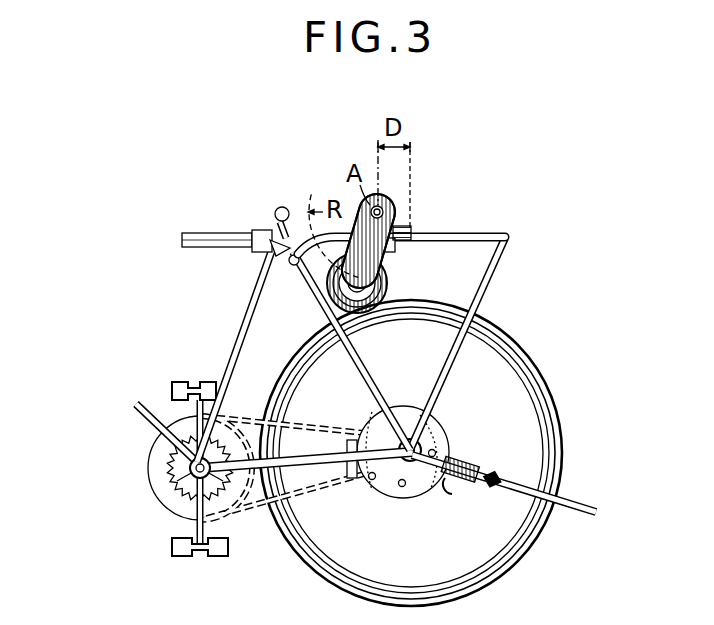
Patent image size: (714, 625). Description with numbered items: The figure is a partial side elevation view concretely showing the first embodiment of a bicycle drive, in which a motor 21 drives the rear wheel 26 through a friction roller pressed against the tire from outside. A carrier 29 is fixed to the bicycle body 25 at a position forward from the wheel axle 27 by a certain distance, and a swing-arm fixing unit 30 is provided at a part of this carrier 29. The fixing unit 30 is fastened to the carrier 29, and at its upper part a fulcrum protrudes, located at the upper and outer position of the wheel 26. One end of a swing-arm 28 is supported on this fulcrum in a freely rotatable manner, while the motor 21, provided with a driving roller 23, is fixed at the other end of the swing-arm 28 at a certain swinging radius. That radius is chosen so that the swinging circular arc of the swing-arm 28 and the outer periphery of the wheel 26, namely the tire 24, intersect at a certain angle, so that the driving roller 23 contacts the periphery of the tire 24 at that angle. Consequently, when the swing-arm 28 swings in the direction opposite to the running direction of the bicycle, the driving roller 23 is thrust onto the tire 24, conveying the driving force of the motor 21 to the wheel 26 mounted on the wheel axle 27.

The motor 21 is at (388, 275).
The driving roller 23 is at (321, 296).
The tire 24 is at (396, 304).
The bicycle body 25 is at (239, 229).
The wheel 26 is at (544, 372).
The wheel axle 27 is at (432, 450).
The swing-arm 28 is at (386, 210).
The carrier 29 is at (507, 233).
The swing-arm fixing unit 30 is at (396, 232).